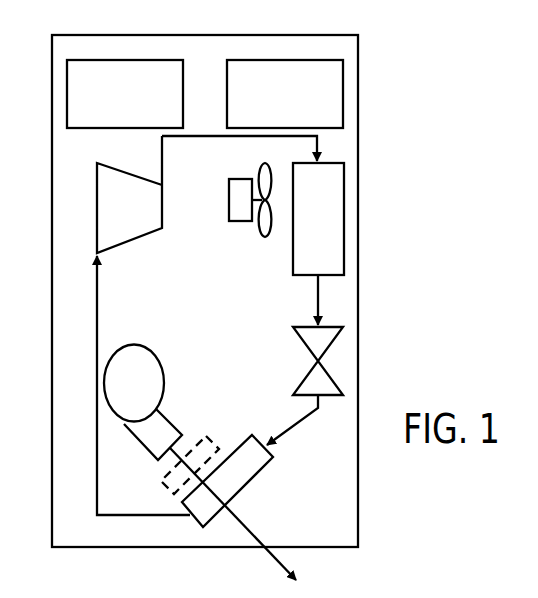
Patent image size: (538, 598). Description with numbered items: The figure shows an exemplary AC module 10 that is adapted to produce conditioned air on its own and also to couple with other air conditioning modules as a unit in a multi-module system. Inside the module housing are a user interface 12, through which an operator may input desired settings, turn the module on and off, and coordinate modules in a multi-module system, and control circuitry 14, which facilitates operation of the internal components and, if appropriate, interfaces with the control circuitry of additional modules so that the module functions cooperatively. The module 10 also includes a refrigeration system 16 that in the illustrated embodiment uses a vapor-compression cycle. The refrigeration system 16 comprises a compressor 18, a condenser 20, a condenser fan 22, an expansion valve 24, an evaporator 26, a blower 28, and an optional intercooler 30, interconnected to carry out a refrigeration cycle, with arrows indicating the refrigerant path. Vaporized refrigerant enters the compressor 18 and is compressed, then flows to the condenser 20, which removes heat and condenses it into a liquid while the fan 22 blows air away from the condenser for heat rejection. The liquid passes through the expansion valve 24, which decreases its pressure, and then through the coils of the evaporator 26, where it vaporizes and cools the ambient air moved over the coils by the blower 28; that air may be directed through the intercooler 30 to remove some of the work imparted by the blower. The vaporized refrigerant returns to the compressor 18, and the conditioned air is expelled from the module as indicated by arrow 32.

The AC module 10 is at (341, 35).
The user interface 12 is at (343, 92).
The control circuitry 14 is at (67, 92).
The refrigeration system 16 is at (129, 160).
The compressor 18 is at (132, 241).
The condenser 20 is at (344, 218).
The condenser fan 22 is at (256, 161).
The expansion valve 24 is at (332, 344).
The evaporator 26 is at (265, 468).
The blower 28 is at (165, 384).
The intercooler 30 is at (207, 443).
The arrow 32 is at (268, 560).